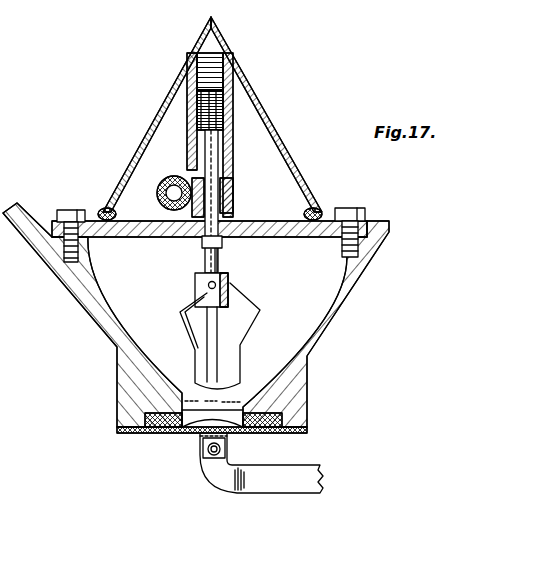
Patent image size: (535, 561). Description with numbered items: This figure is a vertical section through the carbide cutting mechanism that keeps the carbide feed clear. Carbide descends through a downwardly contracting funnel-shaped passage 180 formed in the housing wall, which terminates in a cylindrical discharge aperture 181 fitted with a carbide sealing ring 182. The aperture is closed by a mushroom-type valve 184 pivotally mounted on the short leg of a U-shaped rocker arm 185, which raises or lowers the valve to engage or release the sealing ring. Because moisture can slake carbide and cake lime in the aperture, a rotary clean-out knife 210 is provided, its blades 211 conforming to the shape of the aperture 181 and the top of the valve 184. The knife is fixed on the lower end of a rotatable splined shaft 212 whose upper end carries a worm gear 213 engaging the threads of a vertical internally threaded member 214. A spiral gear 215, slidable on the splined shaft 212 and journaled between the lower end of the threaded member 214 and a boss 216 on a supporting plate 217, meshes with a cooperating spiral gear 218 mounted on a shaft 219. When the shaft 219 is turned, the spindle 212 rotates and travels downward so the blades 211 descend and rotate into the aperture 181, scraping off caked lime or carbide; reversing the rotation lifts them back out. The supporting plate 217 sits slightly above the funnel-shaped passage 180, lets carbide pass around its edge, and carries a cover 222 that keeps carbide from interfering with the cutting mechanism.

The funnel-shaped passage 180 is at (155, 355).
The discharge aperture 181 is at (248, 403).
The carbide sealing ring 182 is at (276, 428).
The mushroom-type valve 184 is at (203, 424).
The U-shaped rocker arm 185 is at (228, 478).
The rotary clean-out knife 210 is at (198, 282).
The blade 211 is at (183, 318).
The splined shaft 212 is at (219, 246).
The worm gear 213 is at (196, 103).
The internally threaded member 214 is at (226, 76).
The spiral gear 215 is at (236, 196).
The boss 216 is at (203, 236).
The supporting plate 217 is at (285, 230).
The spiral gear 218 is at (192, 186).
The shaft 219 is at (170, 190).
The cover 222 is at (142, 142).